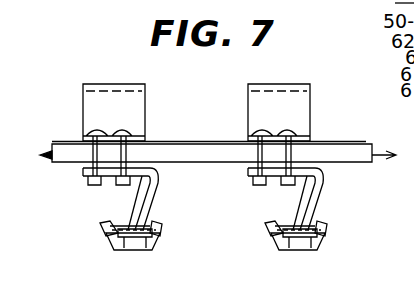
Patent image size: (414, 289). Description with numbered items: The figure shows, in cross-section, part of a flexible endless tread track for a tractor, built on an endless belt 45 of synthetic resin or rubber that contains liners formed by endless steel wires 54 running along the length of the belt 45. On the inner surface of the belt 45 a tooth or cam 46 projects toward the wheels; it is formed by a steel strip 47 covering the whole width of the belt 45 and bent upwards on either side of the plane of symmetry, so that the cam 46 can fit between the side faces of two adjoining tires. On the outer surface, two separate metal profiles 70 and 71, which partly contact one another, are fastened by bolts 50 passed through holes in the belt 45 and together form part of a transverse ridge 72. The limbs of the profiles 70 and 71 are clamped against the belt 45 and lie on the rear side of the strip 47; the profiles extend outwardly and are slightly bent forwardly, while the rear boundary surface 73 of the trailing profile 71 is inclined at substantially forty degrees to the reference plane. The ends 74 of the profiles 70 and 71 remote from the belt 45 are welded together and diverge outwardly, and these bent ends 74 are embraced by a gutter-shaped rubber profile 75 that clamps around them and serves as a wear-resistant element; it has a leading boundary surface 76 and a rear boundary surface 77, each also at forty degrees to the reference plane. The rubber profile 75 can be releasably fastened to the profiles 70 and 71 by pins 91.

The endless belt 45 is at (60, 142).
The tooth or cam 46 is at (146, 85).
The steel strip 47 is at (121, 136).
The bolts 50 is at (90, 185).
The endless steel wires 54 is at (42, 156).
The profile 70 is at (124, 186).
The trailing profile 71 is at (160, 187).
The transverse ridge 72 is at (100, 221).
The rear boundary surface 73 is at (155, 194).
The ends of the profiles 74 is at (121, 246).
The rubber profile 75 is at (144, 242).
The leading boundary surface 76 is at (105, 231).
The rear boundary surface 77 is at (158, 237).
The pins 91 is at (160, 220).